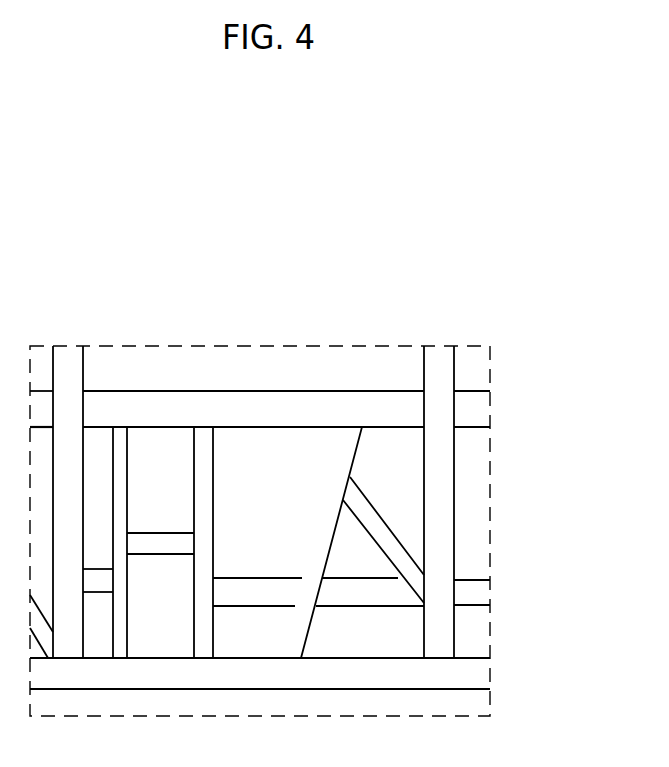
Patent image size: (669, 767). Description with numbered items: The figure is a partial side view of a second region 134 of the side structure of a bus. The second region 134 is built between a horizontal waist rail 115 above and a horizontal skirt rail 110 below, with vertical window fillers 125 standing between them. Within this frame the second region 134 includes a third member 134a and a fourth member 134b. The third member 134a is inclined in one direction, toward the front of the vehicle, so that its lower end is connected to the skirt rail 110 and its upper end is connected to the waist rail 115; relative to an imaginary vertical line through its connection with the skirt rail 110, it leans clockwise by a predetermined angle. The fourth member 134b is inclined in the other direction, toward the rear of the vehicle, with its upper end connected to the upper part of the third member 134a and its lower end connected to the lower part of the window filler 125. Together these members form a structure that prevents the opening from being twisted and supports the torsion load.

The skirt rail 110 is at (470, 674).
The waist rail 115 is at (470, 408).
The window filler 125 is at (68, 360).
The second region 134 is at (359, 255).
The third member 134a is at (325, 525).
The fourth member 134b is at (373, 515).